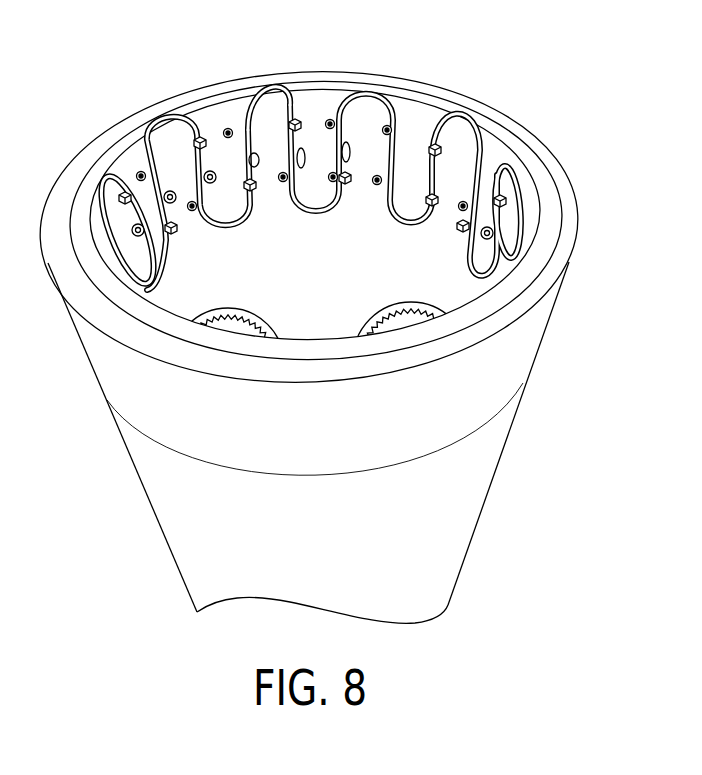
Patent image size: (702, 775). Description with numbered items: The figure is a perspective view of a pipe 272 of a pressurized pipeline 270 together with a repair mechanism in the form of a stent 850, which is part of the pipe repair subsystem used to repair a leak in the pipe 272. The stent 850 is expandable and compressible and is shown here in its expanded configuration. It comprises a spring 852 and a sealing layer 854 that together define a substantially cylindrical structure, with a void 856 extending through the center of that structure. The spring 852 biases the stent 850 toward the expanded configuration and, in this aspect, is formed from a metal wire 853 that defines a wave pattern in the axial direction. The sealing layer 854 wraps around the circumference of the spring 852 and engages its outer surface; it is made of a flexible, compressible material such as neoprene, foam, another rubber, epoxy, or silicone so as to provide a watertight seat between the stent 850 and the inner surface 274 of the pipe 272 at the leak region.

The pipeline 270 is at (468, 488).
The pipe 272 is at (448, 525).
The inner surface 274 is at (333, 250).
The stent 850 is at (303, 153).
The spring 852 is at (397, 303).
The metal wire 853 is at (235, 307).
The sealing layer 854 is at (313, 100).
The void 856 is at (270, 120).